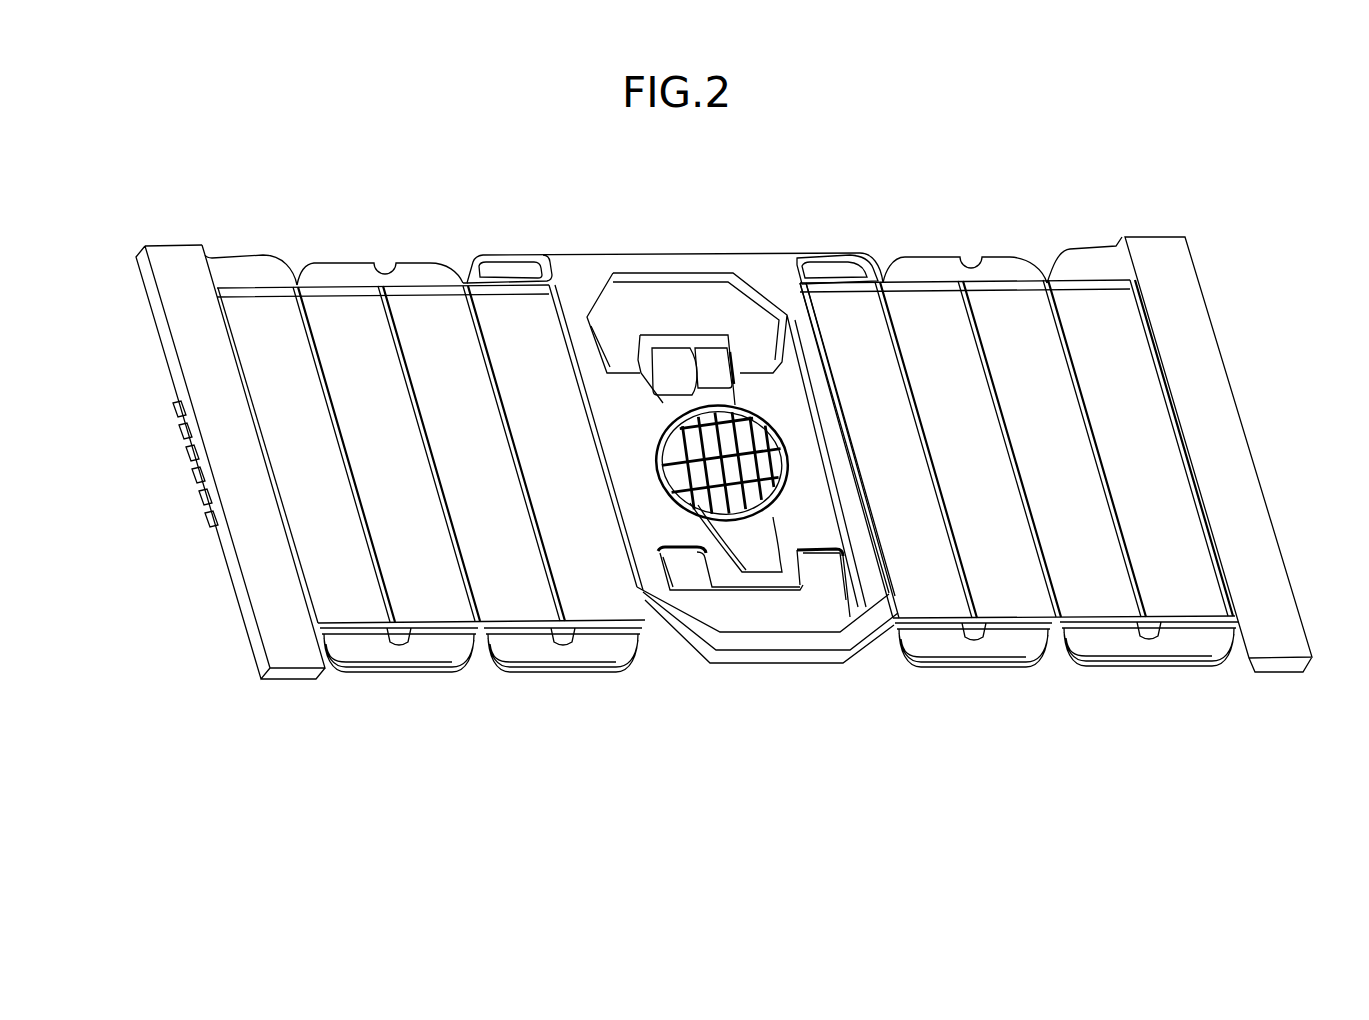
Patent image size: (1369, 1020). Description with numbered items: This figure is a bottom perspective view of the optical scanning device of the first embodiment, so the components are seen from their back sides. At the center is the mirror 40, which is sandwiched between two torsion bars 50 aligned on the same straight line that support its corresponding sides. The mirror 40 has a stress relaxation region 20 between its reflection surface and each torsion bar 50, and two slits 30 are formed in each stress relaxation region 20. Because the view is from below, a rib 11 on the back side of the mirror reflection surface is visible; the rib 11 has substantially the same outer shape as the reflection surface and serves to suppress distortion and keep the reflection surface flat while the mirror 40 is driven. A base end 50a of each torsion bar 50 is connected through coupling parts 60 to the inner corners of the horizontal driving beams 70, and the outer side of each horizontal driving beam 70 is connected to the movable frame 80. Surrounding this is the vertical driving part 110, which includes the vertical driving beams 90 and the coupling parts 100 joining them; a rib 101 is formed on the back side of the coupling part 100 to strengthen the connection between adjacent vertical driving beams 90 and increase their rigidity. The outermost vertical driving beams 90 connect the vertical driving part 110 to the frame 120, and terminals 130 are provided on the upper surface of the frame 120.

The rib 11 is at (700, 589).
The stress relaxation region 20 is at (707, 505).
The slits 30 is at (740, 490).
The mirror 40 is at (703, 504).
The torsion bars 50 is at (703, 388).
The base end 50a is at (675, 340).
The coupling parts 60 is at (773, 583).
The horizontal driving beams 70 is at (860, 618).
The movable frame 80 is at (862, 620).
The vertical driving beams 90 is at (1005, 588).
The coupling part 100 is at (950, 640).
The rib 101 is at (1149, 690).
The vertical driving part 110 is at (1019, 543).
The frame 120 is at (262, 604).
The terminals 130 is at (192, 463).